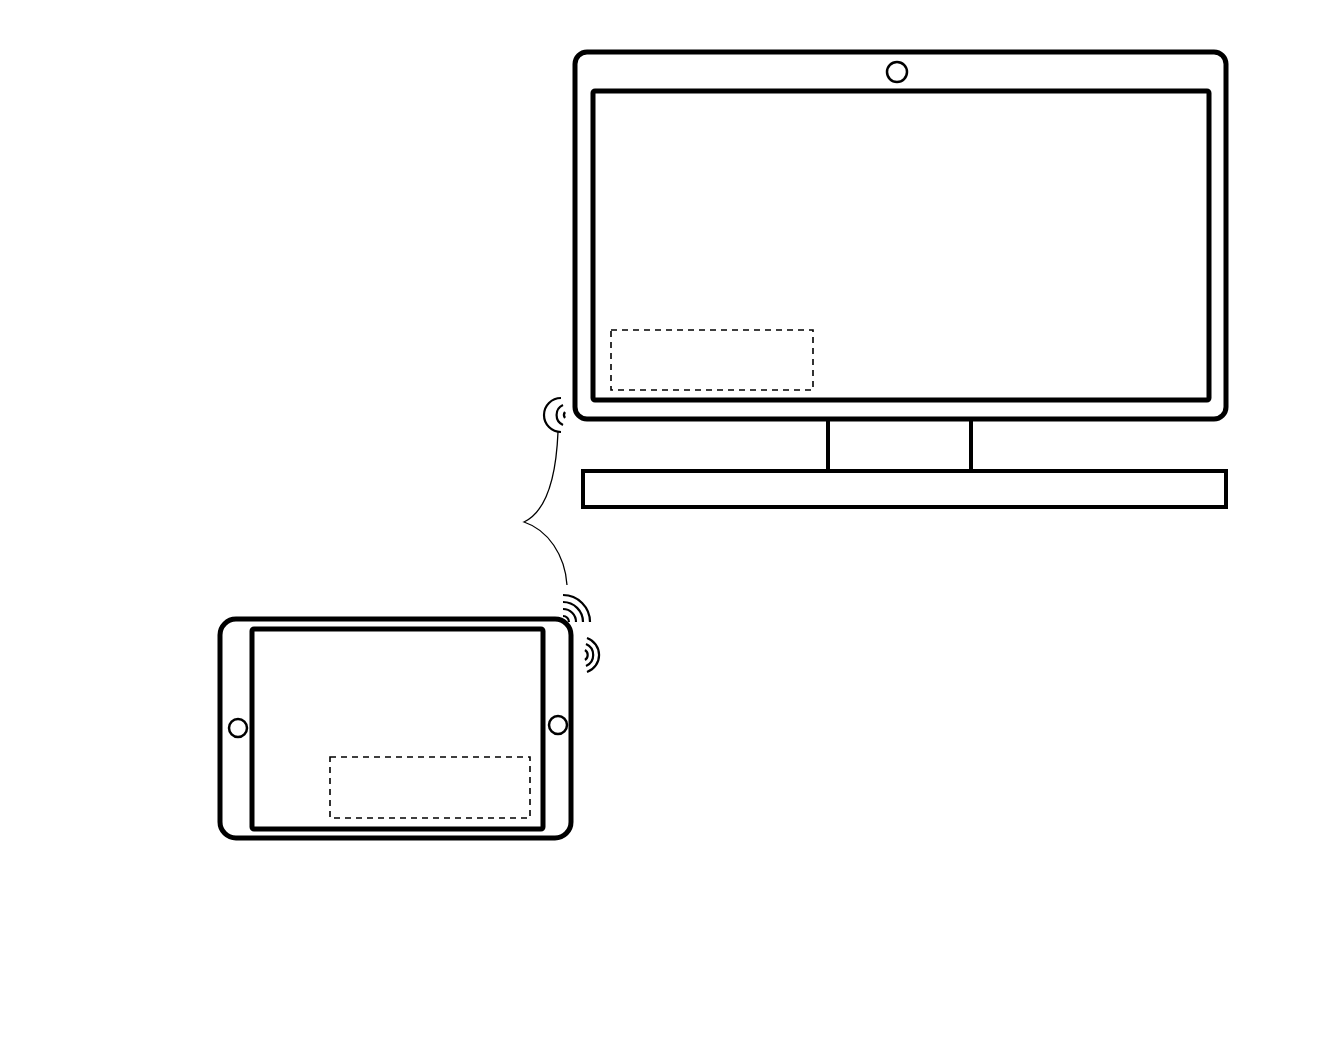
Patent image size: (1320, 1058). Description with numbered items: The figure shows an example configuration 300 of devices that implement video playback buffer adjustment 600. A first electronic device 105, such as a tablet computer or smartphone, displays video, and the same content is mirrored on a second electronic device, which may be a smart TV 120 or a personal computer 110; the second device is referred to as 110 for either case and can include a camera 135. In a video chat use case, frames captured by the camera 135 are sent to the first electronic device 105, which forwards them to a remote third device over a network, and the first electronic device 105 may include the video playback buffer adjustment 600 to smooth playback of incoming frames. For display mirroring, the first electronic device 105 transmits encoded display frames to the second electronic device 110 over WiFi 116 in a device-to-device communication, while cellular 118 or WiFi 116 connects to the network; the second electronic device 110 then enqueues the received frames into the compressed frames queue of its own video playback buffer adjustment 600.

The configuration 300 is at (218, 61).
The first electronic device 105 is at (455, 739).
The personal computer 110 is at (903, 220).
The smart TV 120 is at (900, 260).
The camera 135 is at (898, 62).
The WiFi 116 is at (425, 510).
The cellular connection to network 118 is at (769, 655).
The video playback buffer adjustment 600 is at (775, 381).